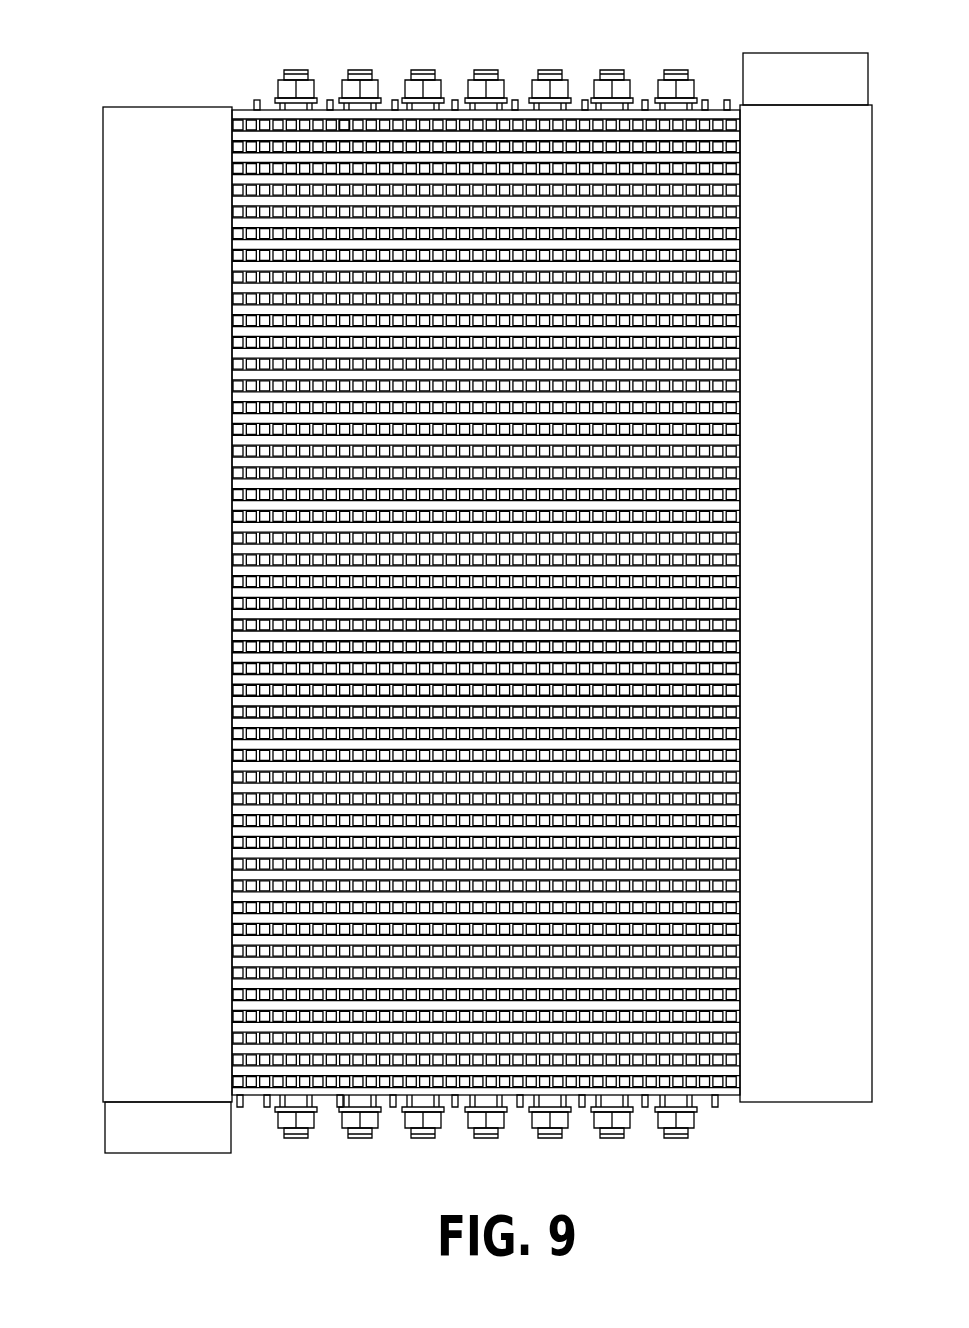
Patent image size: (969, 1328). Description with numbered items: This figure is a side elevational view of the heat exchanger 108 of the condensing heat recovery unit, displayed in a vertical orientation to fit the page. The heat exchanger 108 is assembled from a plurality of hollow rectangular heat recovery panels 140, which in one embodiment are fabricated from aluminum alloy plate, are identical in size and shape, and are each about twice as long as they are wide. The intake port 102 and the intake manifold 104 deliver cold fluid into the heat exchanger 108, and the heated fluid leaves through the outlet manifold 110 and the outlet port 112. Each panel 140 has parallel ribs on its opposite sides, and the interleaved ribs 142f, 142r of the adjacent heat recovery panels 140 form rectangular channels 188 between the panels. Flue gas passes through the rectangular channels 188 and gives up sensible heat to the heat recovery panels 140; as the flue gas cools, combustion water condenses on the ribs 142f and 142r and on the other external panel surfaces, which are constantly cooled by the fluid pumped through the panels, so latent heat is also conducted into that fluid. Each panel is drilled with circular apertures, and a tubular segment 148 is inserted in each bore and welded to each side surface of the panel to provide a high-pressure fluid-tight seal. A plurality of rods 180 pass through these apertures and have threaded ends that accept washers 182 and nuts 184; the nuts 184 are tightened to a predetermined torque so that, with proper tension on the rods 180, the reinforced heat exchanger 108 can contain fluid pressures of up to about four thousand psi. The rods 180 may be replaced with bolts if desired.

The intake port 102 is at (182, 1137).
The intake manifold 104 is at (185, 118).
The heat exchanger 108 is at (765, 1162).
The outlet manifold 110 is at (790, 1087).
The outlet port 112 is at (783, 68).
The heat recovery panel 140 is at (272, 115).
The rib 142f is at (252, 102).
The rib 142r is at (340, 123).
The tubular segment 148 is at (273, 235).
The rod 180 is at (365, 70).
The washer 182 is at (570, 92).
The nut 184 is at (622, 90).
The rectangular channel 188 is at (320, 132).